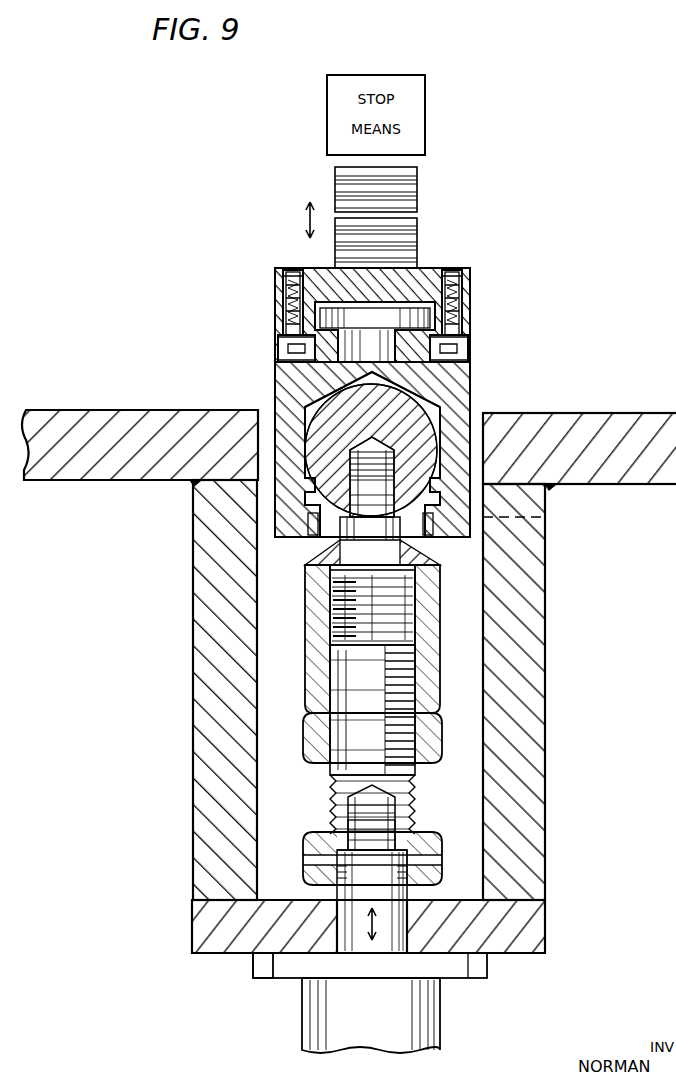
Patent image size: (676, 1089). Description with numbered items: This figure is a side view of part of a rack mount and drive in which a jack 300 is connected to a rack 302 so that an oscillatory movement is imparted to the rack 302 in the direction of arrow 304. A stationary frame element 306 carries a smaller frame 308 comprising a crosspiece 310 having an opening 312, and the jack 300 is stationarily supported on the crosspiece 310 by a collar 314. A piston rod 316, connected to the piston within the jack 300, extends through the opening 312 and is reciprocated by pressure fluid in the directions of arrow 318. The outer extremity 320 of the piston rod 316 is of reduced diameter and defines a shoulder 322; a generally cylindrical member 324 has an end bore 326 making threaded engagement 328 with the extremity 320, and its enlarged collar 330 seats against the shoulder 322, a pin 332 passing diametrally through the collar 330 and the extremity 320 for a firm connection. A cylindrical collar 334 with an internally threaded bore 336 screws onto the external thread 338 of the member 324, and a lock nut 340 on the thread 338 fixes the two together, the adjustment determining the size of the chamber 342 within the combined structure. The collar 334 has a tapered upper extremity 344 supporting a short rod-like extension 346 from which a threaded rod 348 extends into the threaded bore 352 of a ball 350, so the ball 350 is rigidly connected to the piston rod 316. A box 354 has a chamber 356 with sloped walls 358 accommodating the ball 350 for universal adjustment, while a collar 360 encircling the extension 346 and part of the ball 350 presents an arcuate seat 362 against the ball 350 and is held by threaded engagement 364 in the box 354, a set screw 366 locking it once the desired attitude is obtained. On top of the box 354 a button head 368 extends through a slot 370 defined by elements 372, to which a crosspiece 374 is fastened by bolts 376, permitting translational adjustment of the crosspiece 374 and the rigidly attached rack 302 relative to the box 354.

The jack 300 is at (440, 1032).
The rack 302 is at (419, 236).
The arrow 304 is at (305, 222).
The stationary frame element 306 is at (106, 418).
The frame 308 is at (404, 716).
The crosspiece 310 is at (290, 905).
The opening 312 is at (263, 962).
The collar 314 is at (490, 965).
The piston rod 316 is at (400, 898).
The arrow 318 is at (380, 925).
The outer extremity 320 is at (398, 810).
The shoulder 322 is at (412, 875).
The cylindrical member 324 is at (340, 772).
The end bore 326 is at (400, 832).
The threaded engagement 328 is at (332, 800).
The enlarged collar 330 is at (320, 845).
The pin 332 is at (325, 860).
The collar 334 is at (305, 655).
The internally threaded bore 336 is at (330, 615).
The thread 338 is at (330, 672).
The lock nut 340 is at (305, 738).
The chamber 342 is at (400, 610).
The tapered upper extremity 344 is at (420, 568).
The rod-like extension 346 is at (320, 556).
The threaded rod 348 is at (400, 546).
The ball 350 is at (408, 410).
The threaded bore 352 is at (470, 415).
The box 354 is at (280, 352).
The chamber 356 is at (278, 390).
The sloped walls 358 is at (302, 407).
The collar 360 is at (298, 540).
The arcuate seat 362 is at (306, 522).
The threaded engagement 364 is at (300, 515).
The set screw 366 is at (455, 517).
The button head 368 is at (430, 312).
The slot 370 is at (300, 380).
The elements 372 is at (292, 318).
The crosspiece 374 is at (283, 272).
The bolts 376 is at (289, 295).